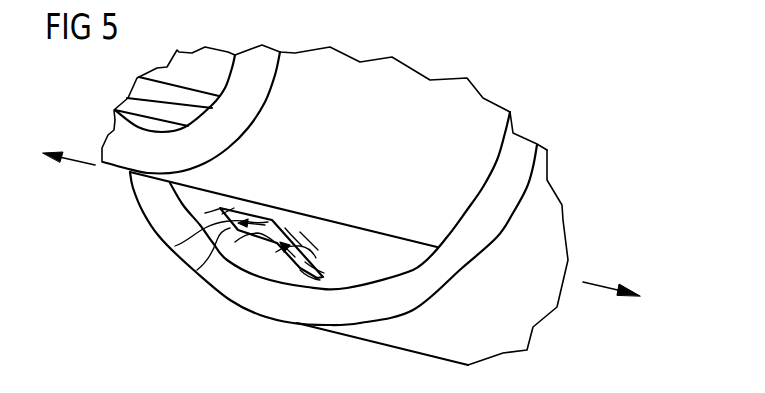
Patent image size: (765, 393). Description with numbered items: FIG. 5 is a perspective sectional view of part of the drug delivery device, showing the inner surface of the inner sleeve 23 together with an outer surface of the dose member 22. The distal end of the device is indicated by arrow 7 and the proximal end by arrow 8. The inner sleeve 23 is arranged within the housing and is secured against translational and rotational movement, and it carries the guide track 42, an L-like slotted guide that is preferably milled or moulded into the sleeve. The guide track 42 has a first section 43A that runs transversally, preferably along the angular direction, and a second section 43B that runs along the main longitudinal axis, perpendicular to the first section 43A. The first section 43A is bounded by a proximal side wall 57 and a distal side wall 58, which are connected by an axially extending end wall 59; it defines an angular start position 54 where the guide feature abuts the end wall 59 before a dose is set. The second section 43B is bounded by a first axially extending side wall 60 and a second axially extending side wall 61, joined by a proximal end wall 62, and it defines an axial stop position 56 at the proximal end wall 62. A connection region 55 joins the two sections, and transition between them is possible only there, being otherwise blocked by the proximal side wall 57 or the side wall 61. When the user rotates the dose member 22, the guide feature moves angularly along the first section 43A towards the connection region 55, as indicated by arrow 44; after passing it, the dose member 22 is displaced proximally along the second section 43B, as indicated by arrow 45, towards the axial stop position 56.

The arrow indicating distal end 7 is at (601, 283).
The arrow indicating proximal end 8 is at (80, 161).
The dose member 22 is at (470, 103).
The inner sleeve 23 is at (556, 225).
The guide track 42 is at (278, 217).
The first section 43A is at (270, 270).
The second section 43B is at (197, 270).
The arrow indicating angular displacement 44 is at (296, 266).
The arrow indicating proximal displacement 45 is at (290, 220).
The angular start position 54 is at (312, 267).
The connection region 55 is at (294, 230).
The axial stop position 56 is at (175, 246).
The proximal side wall 57 is at (276, 252).
The distal side wall 58 is at (306, 239).
The axially extending end wall 59 is at (315, 282).
The first axially extending side wall 60 is at (228, 216).
The second axially extending side wall 61 is at (235, 242).
The proximal end wall 62 is at (219, 210).